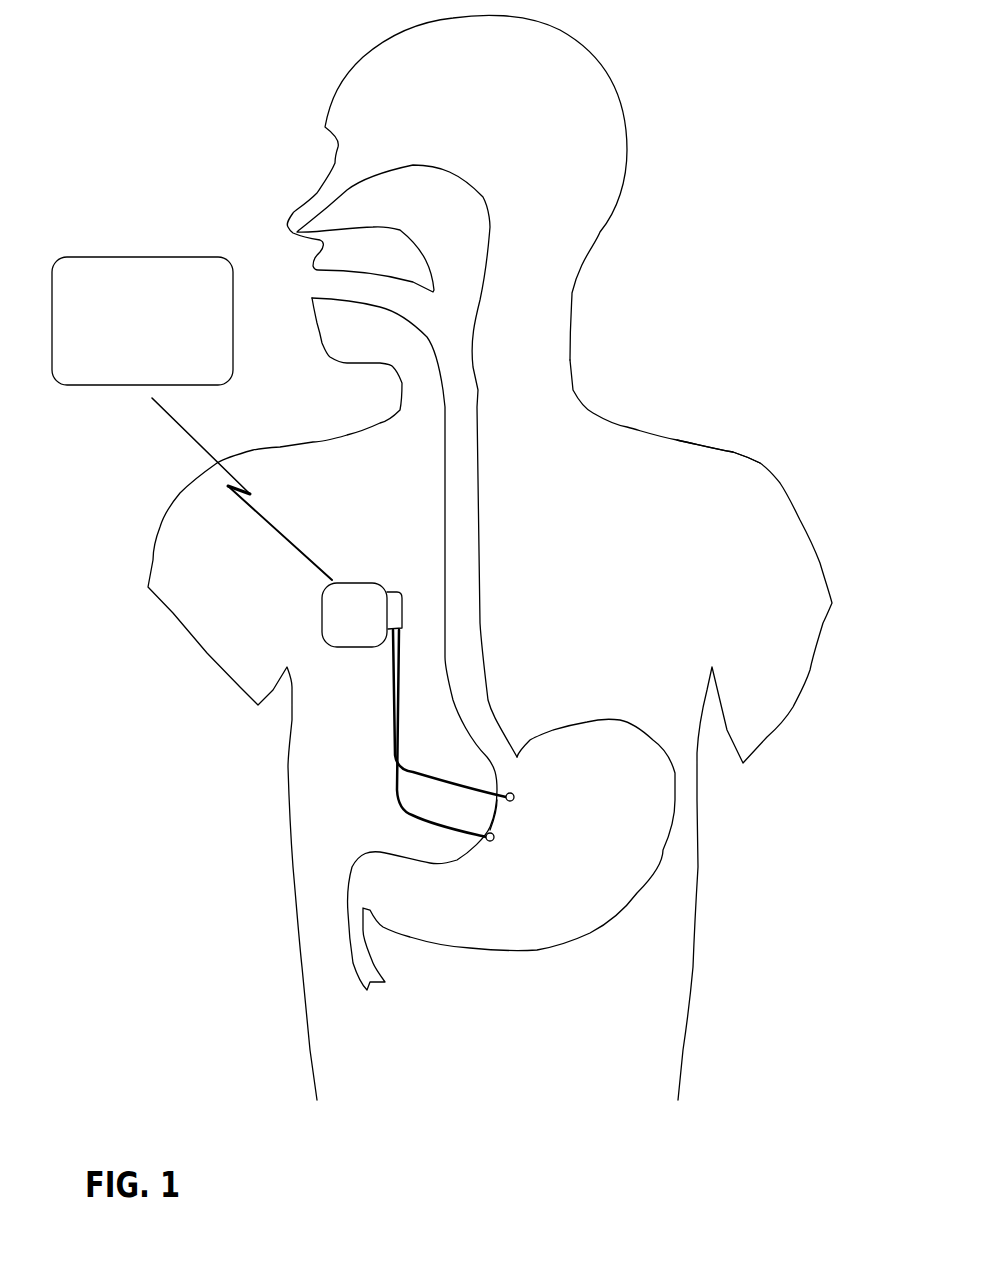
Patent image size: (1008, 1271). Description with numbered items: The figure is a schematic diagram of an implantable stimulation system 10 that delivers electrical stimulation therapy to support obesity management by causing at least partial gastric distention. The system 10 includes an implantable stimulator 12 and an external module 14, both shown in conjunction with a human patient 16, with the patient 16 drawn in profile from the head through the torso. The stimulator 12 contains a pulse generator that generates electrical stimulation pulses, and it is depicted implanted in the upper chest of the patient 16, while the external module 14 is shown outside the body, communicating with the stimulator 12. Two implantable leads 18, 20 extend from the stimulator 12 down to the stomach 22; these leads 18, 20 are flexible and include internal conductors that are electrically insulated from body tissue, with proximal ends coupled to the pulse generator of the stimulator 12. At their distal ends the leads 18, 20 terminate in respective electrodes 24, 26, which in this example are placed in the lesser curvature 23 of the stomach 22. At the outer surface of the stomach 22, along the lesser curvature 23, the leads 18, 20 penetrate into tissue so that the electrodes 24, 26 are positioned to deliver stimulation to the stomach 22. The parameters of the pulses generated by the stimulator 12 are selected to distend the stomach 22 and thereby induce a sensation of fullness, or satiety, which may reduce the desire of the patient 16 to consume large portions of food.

The implantable stimulation system 10 is at (630, 384).
The implantable stimulator 12 is at (357, 566).
The external module 14 is at (143, 255).
The patient 16 is at (733, 452).
The implantable lead 18 is at (393, 797).
The implantable lead 20 is at (410, 747).
The stomach 22 is at (577, 710).
The lesser curvature 23 is at (512, 850).
The electrode 24 is at (494, 837).
The electrode 26 is at (514, 797).